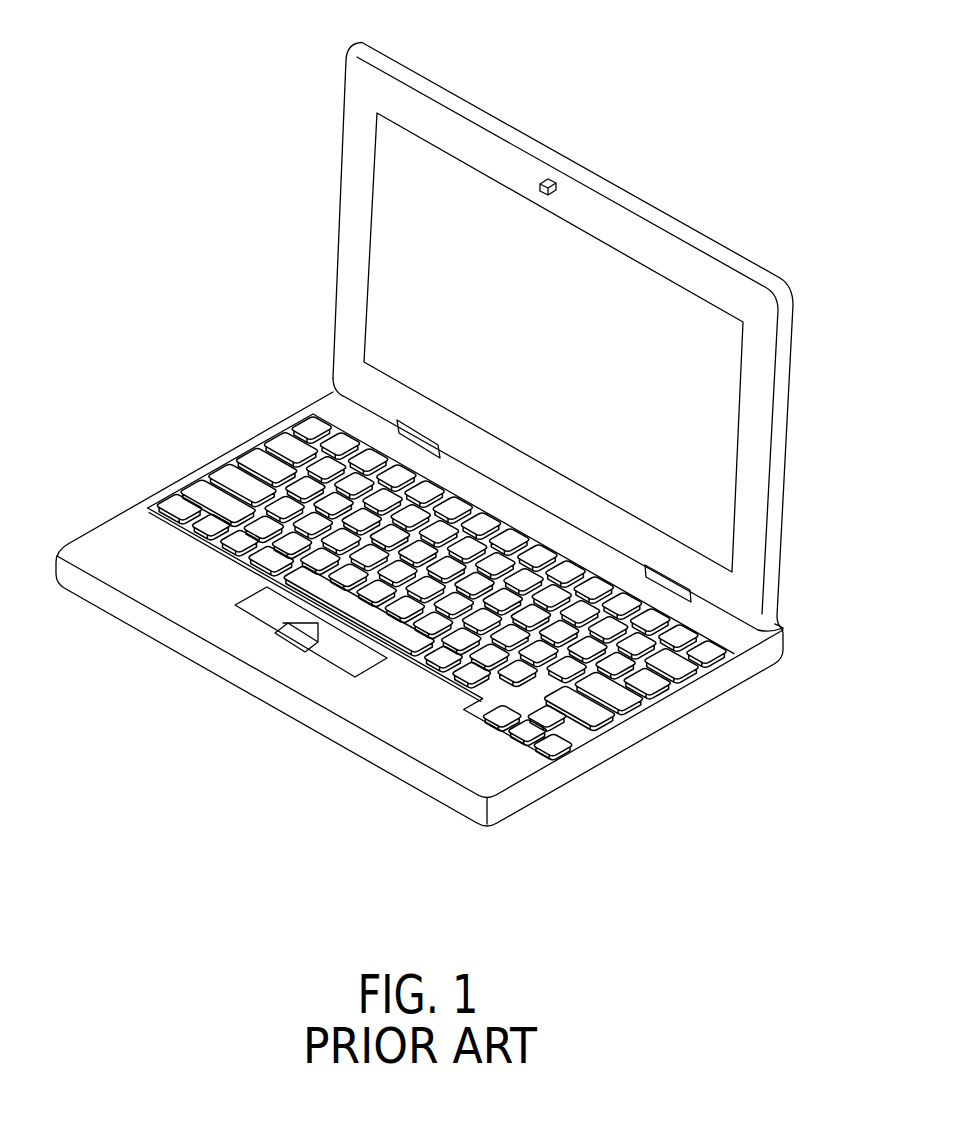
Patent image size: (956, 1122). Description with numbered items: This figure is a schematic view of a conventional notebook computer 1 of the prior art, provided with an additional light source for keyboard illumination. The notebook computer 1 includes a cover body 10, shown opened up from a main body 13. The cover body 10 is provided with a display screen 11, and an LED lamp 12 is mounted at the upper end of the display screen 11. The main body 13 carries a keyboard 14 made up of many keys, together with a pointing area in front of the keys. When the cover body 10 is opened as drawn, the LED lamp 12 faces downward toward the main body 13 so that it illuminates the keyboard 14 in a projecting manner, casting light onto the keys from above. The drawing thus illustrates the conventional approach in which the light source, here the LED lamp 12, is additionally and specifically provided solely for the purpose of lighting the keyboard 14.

The notebook computer 1 is at (227, 170).
The cover body 10 is at (360, 119).
The display screen 11 is at (397, 247).
The LED lamp 12 is at (549, 180).
The main body 13 is at (150, 568).
The keyboard 14 is at (266, 462).